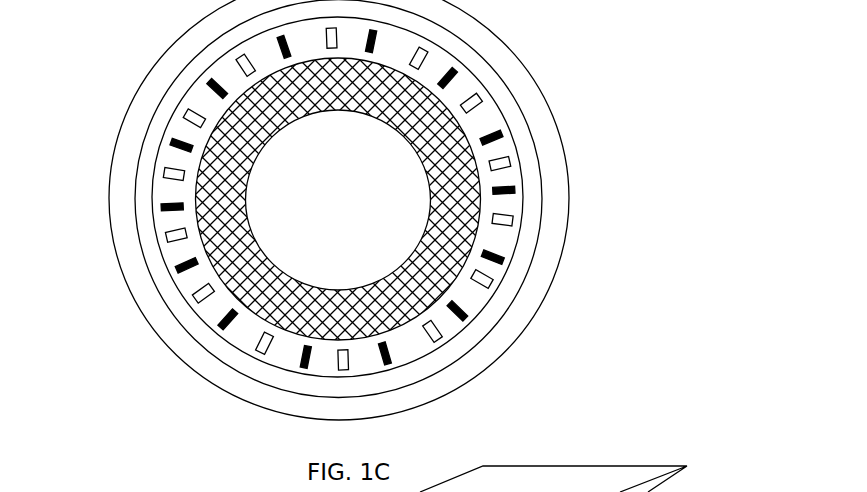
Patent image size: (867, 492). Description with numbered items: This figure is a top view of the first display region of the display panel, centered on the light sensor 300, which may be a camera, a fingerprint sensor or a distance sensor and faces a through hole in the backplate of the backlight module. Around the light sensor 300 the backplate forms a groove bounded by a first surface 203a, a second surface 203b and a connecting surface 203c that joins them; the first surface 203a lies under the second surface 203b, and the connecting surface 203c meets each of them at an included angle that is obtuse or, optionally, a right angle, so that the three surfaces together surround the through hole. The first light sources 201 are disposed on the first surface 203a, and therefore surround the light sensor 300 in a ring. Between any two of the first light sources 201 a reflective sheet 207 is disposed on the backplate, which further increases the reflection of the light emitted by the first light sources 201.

The first light sources 201 is at (437, 340).
The first surface 203a is at (549, 172).
The second surface 203b is at (489, 126).
The connecting surface 203c is at (523, 268).
The reflective sheet 207 is at (210, 78).
The light sensor 300 is at (416, 99).